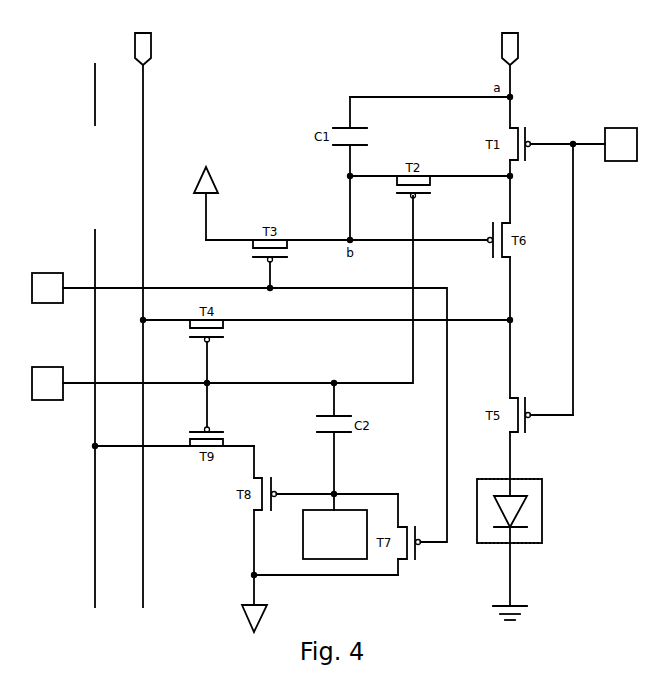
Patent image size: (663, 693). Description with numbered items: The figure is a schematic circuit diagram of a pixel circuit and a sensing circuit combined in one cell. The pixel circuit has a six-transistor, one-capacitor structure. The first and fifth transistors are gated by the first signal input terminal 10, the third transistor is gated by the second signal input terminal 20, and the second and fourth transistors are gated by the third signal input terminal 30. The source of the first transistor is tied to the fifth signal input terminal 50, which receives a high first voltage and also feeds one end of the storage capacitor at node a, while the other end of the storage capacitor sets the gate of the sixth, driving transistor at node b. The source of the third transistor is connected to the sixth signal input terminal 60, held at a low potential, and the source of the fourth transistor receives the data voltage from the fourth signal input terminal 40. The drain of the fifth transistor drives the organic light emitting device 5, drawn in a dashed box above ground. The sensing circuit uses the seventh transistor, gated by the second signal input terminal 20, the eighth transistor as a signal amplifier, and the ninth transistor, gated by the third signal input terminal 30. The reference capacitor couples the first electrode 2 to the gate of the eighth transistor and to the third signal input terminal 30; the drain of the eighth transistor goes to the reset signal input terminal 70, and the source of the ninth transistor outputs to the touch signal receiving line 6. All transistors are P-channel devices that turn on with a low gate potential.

The first electrode 2 is at (335, 534).
The organic light emitting device 5 is at (542, 511).
The touch signal receiving line 6 is at (95, 494).
The first signal input terminal 10 is at (584, 144).
The second signal input terminal 20 is at (239, 407).
The third signal input terminal 30 is at (222, 298).
The fourth signal input terminal 40 is at (143, 320).
The fifth signal input terminal 50 is at (510, 80).
The sixth signal input terminal 60 is at (206, 203).
The reset signal input terminal 70 is at (254, 603).